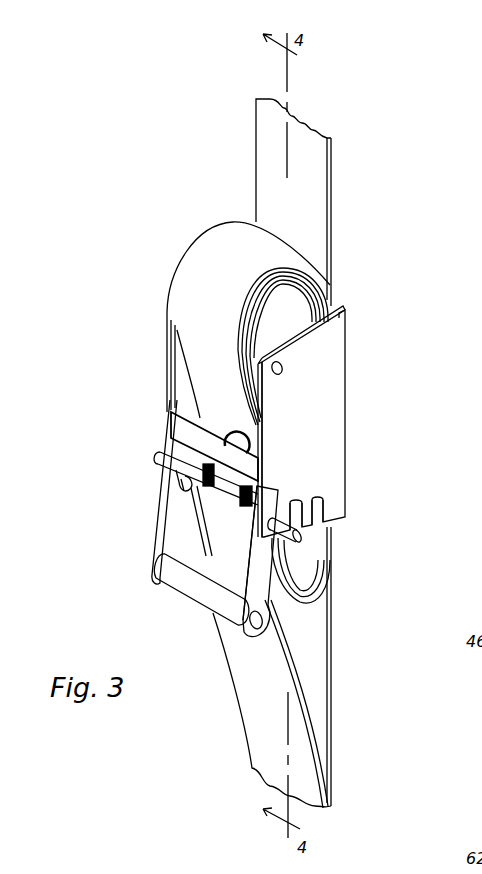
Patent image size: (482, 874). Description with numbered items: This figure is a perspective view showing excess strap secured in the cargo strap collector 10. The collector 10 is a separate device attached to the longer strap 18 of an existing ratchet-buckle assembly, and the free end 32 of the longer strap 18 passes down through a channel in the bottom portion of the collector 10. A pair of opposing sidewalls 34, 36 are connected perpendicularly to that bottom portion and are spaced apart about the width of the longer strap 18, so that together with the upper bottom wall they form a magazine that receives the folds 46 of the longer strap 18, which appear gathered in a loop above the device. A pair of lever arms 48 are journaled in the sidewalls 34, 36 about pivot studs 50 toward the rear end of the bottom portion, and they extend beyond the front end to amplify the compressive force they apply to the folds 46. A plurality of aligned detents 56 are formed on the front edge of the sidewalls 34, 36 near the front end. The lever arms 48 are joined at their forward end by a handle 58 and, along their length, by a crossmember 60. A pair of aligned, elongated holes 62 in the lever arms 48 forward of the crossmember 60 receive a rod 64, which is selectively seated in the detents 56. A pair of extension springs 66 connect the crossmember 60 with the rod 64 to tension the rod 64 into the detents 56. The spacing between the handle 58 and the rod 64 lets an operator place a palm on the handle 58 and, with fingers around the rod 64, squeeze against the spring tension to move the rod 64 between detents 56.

The cargo strap collector 10 is at (381, 411).
The longer strap 18 is at (327, 191).
The free end 32 is at (246, 725).
The sidewall 34 is at (325, 437).
The sidewall 36 is at (182, 398).
The folds 46 is at (154, 311).
The lever arms 48 is at (158, 572).
The pivot studs 50 is at (290, 370).
The detents 56 is at (300, 512).
The handle 58 is at (204, 594).
The crossmember 60 is at (170, 447).
The elongated holes 62 is at (175, 508).
The rod 64 is at (302, 537).
The extension springs 66 is at (246, 508).